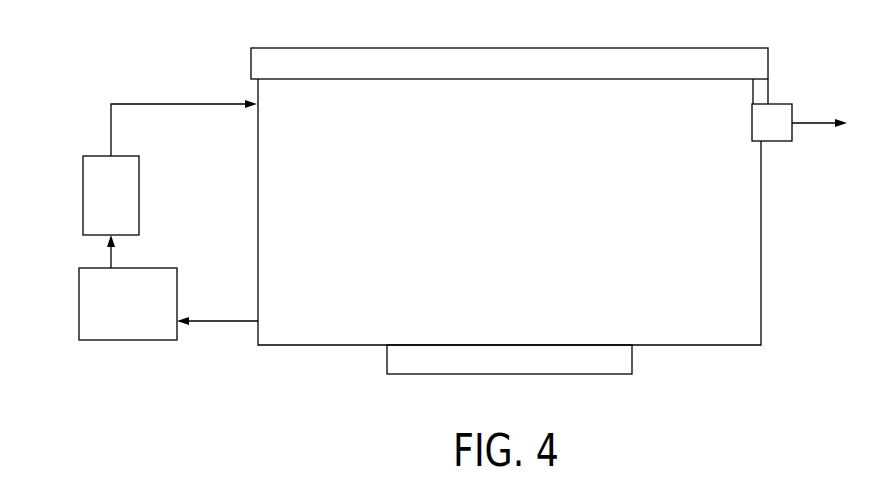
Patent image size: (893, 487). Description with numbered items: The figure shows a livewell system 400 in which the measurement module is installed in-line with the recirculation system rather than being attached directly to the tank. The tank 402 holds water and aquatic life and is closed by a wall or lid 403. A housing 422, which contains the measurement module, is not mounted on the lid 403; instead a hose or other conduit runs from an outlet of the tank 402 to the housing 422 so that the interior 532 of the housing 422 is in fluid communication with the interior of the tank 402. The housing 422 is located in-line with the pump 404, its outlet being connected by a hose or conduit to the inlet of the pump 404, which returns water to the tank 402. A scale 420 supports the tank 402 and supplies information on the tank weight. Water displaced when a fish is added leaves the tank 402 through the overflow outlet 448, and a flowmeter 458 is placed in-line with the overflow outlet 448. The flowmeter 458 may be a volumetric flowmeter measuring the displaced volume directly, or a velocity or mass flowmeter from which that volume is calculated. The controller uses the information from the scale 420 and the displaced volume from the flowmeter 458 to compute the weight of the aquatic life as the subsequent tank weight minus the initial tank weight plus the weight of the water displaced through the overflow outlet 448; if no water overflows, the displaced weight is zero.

The livewell system 400 is at (210, 425).
The tank 402 is at (258, 188).
The lid 403 is at (509, 48).
The pump 404 is at (82, 196).
The scale 420 is at (633, 360).
The housing 422 is at (78, 301).
The overflow outlet 448 is at (772, 142).
The flowmeter 458 is at (770, 90).
The interior of the housing 532 is at (148, 311).